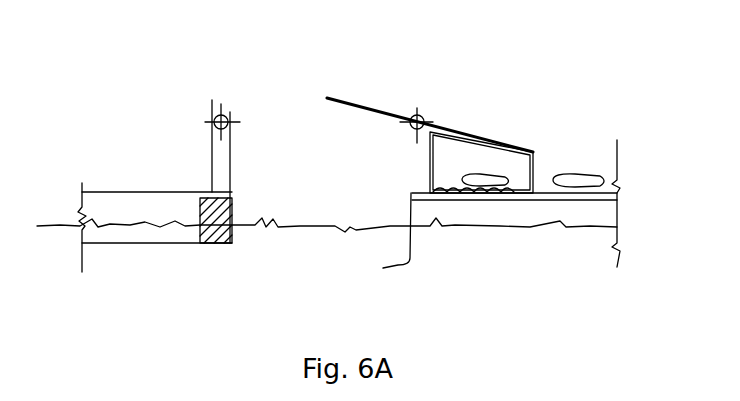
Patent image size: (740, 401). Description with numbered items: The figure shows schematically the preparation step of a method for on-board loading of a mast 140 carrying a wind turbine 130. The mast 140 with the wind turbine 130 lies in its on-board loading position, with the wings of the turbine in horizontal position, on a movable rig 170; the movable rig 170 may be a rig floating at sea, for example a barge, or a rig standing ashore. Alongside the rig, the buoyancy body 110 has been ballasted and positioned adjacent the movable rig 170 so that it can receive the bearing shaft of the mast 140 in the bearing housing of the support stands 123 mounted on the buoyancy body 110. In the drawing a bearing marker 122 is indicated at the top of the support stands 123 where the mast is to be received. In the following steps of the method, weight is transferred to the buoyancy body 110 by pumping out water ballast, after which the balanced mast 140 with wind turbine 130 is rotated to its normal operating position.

The buoyancy body 110 is at (110, 232).
The pivot marker 122 is at (211, 102).
The support stands 123 is at (218, 167).
The mast 140 is at (370, 103).
The movable rig 170 is at (463, 163).
The wind turbine 130 is at (560, 160).